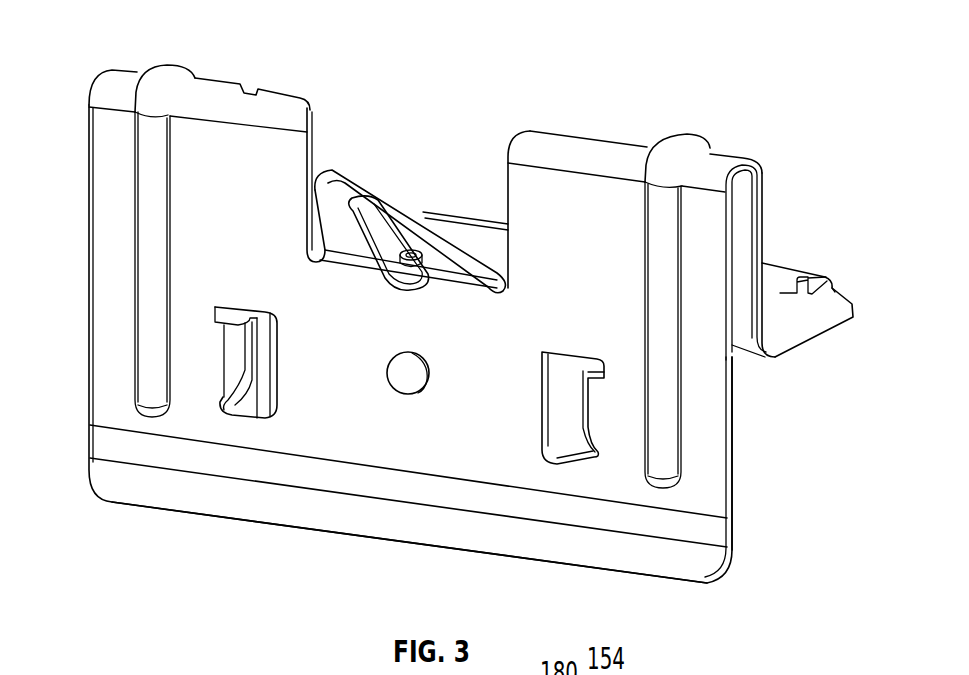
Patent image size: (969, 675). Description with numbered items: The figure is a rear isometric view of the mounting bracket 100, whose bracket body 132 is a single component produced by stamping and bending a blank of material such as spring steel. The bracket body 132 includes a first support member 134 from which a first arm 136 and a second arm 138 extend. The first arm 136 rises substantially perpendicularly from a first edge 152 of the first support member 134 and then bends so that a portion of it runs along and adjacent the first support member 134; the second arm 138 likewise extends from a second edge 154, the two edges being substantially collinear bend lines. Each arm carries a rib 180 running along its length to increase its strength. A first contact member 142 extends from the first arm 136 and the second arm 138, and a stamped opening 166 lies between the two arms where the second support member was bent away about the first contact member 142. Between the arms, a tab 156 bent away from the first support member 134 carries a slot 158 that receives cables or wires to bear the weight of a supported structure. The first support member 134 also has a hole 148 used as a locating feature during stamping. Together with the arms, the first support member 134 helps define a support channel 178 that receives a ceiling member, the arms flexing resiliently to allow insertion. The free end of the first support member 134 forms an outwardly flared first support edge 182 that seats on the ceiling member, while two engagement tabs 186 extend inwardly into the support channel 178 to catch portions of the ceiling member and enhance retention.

The mounting bracket 100 is at (140, 31).
The bracket body 132 is at (710, 463).
The first support member 134 is at (100, 222).
The first arm 136 is at (750, 213).
The second arm 138 is at (213, 82).
The first contact member 142 is at (825, 315).
The hole 148 is at (404, 412).
The first edge 152 is at (635, 158).
The second edge 154 is at (102, 85).
The tab 156 is at (452, 234).
The slot 158 is at (358, 186).
The stamped opening 166 is at (533, 112).
The support channel 178 is at (760, 380).
The rib 180 is at (173, 71).
The first support edge 182 is at (637, 578).
The engagement tabs 186 is at (233, 363).